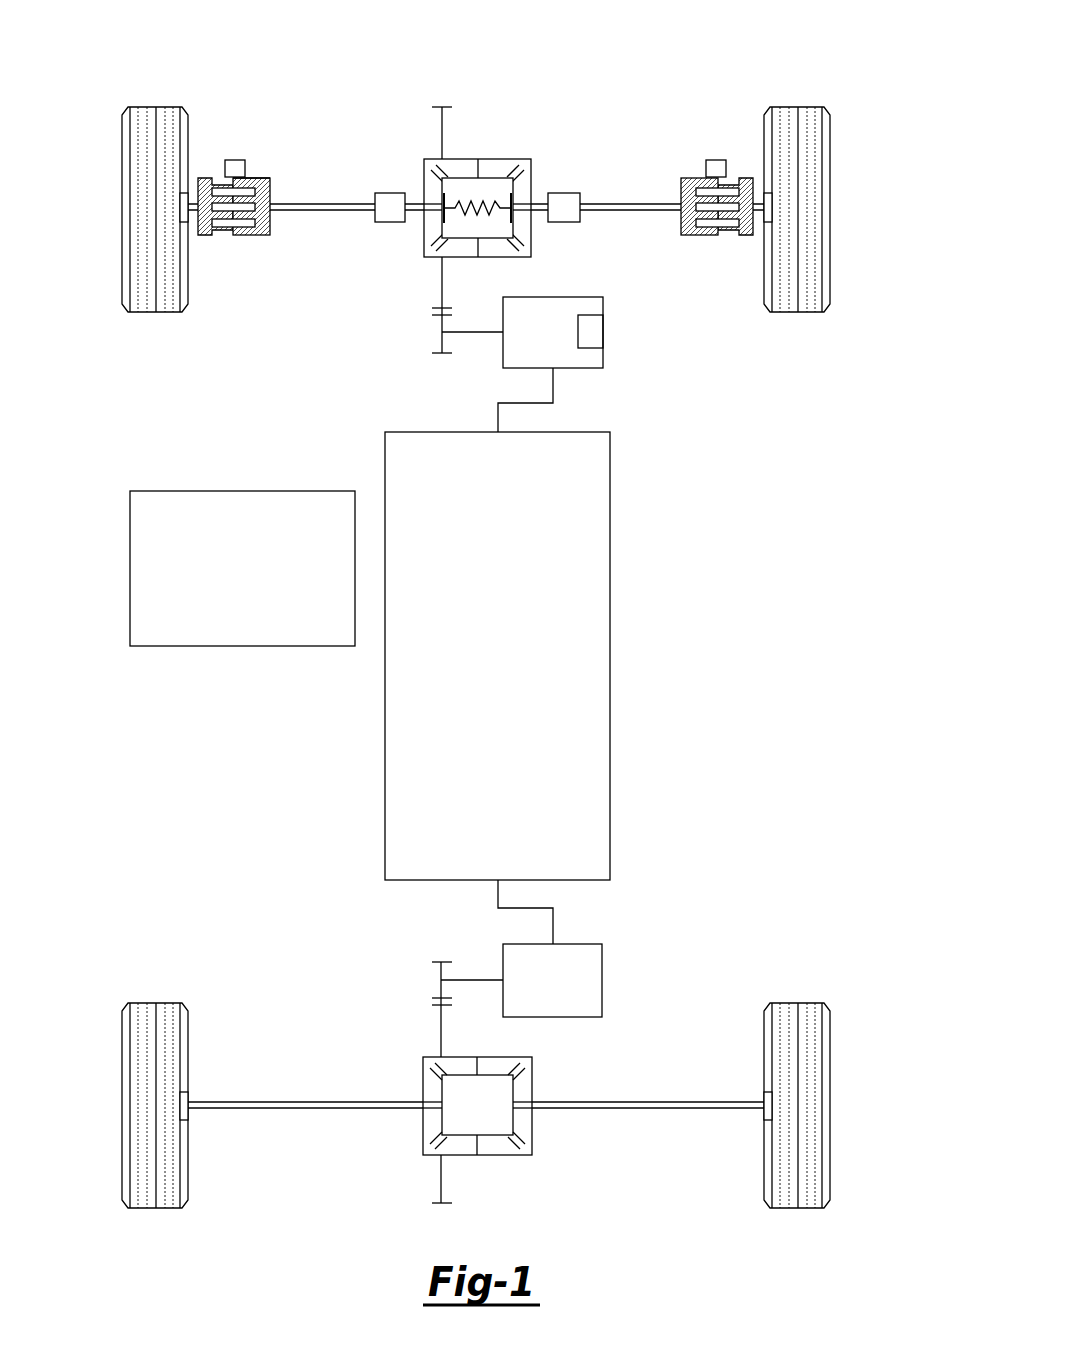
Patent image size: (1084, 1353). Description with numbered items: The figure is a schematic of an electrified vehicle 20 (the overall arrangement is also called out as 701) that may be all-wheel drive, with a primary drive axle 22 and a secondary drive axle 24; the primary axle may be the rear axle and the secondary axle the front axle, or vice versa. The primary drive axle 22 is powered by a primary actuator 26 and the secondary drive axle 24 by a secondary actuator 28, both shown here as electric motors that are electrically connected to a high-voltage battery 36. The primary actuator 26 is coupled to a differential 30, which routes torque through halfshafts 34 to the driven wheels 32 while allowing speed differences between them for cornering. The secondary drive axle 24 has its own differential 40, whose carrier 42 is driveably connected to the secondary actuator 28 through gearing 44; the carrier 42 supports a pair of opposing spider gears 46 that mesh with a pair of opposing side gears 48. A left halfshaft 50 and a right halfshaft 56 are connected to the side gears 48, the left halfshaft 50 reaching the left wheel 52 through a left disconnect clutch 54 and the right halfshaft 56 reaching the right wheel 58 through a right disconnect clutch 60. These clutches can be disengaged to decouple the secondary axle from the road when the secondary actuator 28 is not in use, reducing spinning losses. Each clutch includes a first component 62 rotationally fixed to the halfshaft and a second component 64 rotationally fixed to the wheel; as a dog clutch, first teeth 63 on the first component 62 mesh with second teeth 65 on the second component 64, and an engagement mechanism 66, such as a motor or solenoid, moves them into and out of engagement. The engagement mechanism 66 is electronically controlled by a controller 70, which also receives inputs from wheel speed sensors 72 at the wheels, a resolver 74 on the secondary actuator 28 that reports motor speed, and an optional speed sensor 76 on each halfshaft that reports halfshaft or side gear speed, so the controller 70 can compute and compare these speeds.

The electrified vehicle 20 is at (693, 32).
The powertrain system 701 is at (892, 80).
The primary drive axle 22 is at (745, 985).
The secondary drive axle 24 is at (648, 127).
The primary actuator 26 is at (602, 980).
The secondary actuator 28 is at (574, 336).
The differential 30 is at (530, 1173).
The driven wheels 32 is at (157, 1208).
The halfshafts 34 is at (328, 1102).
The high-voltage battery 36 is at (610, 657).
The differential 40 is at (487, 169).
The carrier 42 is at (530, 233).
The gearing 44 is at (442, 124).
The spider gears 46 is at (493, 178).
The side gears 48 is at (442, 222).
The left halfshaft 50 is at (340, 204).
The left wheel 52 is at (157, 107).
The left disconnect clutch 54 is at (254, 195).
The right halfshaft 56 is at (623, 204).
The right wheel 58 is at (797, 107).
The right disconnect clutch 60 is at (712, 135).
The first component 62 is at (258, 237).
The first teeth 63 is at (270, 177).
The second component 64 is at (215, 237).
The second teeth 65 is at (213, 178).
The engagement mechanism 66 is at (232, 160).
The controller 70 is at (130, 568).
The wheel speed sensors 72 is at (182, 212).
The resolver 74 is at (578, 330).
The speed sensor 76 is at (390, 193).